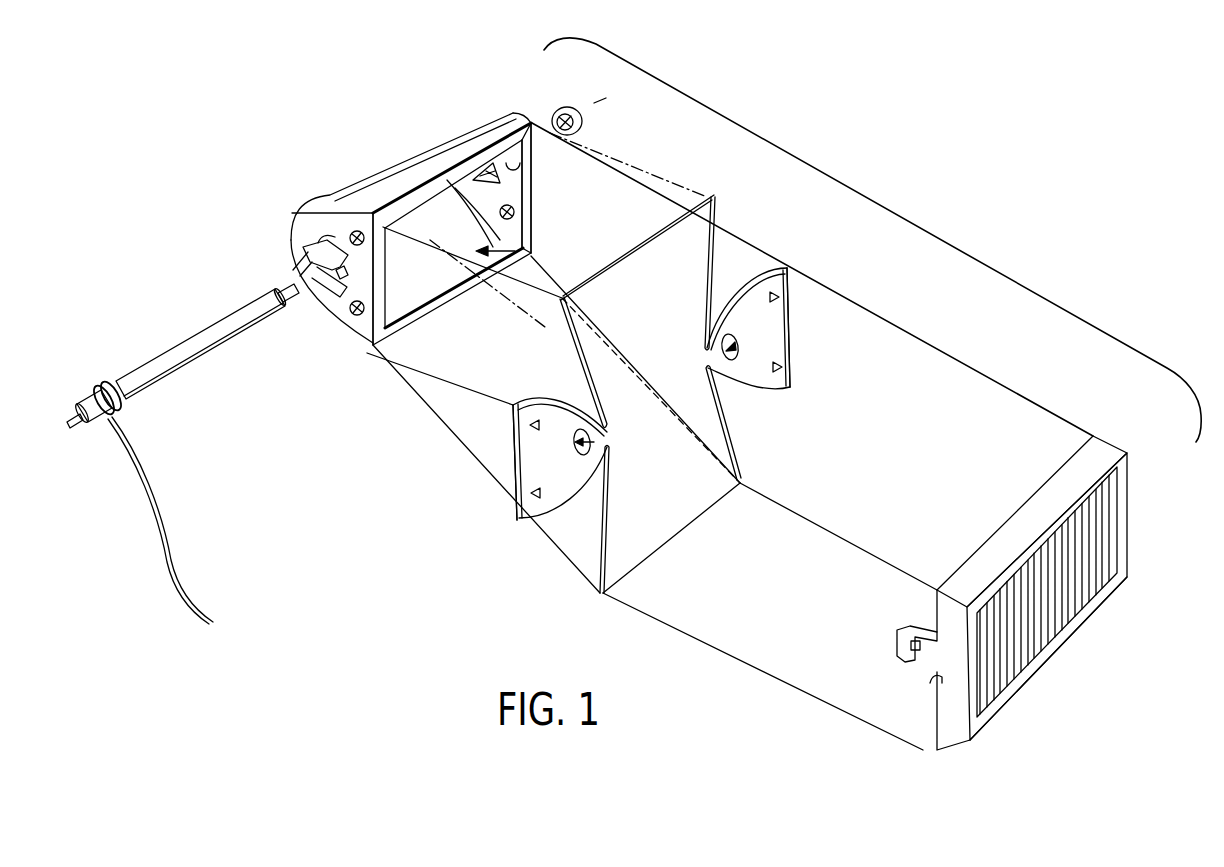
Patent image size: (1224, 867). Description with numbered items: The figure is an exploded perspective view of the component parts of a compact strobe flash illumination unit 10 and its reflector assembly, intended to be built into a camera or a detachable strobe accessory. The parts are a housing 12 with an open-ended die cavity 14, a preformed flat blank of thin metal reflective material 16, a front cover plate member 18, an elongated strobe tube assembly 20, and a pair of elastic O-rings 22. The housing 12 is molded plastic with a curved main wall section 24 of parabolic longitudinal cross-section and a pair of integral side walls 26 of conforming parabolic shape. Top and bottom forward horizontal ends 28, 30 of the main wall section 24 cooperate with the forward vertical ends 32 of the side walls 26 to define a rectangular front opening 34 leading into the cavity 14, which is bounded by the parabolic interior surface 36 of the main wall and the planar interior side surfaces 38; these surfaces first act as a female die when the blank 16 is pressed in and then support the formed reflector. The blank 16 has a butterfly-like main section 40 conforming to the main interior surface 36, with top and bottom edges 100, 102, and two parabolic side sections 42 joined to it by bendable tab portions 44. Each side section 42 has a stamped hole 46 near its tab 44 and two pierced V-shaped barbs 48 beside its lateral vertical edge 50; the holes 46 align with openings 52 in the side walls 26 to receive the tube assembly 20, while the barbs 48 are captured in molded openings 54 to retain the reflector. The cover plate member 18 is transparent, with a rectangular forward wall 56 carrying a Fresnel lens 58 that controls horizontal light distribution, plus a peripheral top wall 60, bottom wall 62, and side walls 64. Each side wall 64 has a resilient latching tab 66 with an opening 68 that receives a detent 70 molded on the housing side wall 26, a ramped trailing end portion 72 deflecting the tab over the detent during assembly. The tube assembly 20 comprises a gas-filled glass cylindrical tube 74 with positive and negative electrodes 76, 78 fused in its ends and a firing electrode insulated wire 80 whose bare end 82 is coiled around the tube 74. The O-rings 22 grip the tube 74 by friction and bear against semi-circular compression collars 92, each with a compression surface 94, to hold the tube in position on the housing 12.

The strobe flash illumination unit 10 is at (909, 196).
The housing 12 is at (530, 121).
The die cavity 14 is at (398, 305).
The blank of thin metal reflective material 16 is at (714, 192).
The front cover plate member 18 is at (1032, 600).
The strobe tube assembly 20 is at (183, 443).
The elastic O-rings 22 is at (583, 106).
The curved main wall section 24 is at (423, 173).
The side walls 26 is at (531, 219).
The top forward horizontal end 28 is at (492, 150).
The bottom forward horizontal end 30 is at (433, 305).
The forward vertical ends 32 is at (530, 238).
The rectangular front opening 34 is at (524, 250).
The parabolic interior surface 36 is at (452, 280).
The interior side surfaces 38 is at (531, 201).
The main section 40 is at (646, 393).
The side sections 42 is at (525, 447).
The bendable tab portions 44 is at (606, 432).
The stamped hole 46 is at (596, 440).
The V-shaped tabs or barbs 48 is at (539, 425).
The lateral vertical edge 50 is at (518, 500).
The openings 52 is at (293, 237).
The integrally molded openings 54 is at (356, 231).
The forward wall 56 is at (1123, 467).
The Fresnel lens 58 is at (1110, 557).
The top wall 60 is at (1107, 454).
The bottom wall 62 is at (950, 747).
The side walls 64 is at (943, 712).
The resilient latching tab 66 is at (932, 667).
The opening 68 is at (923, 653).
The latching protrusion or detent 70 is at (337, 293).
The ramped trailing end portion 72 is at (910, 630).
The glass cylindrical tube 74 is at (183, 351).
The positive electrode 76 is at (68, 427).
The negative electrode 78 is at (287, 287).
The insulated wire 80 is at (158, 494).
The bare end 82 is at (118, 385).
The semi-circular compression collars 92 is at (337, 228).
The semi-circular compression surface 94 is at (317, 275).
The top edge 100 is at (632, 247).
The bottom edge 102 is at (728, 500).